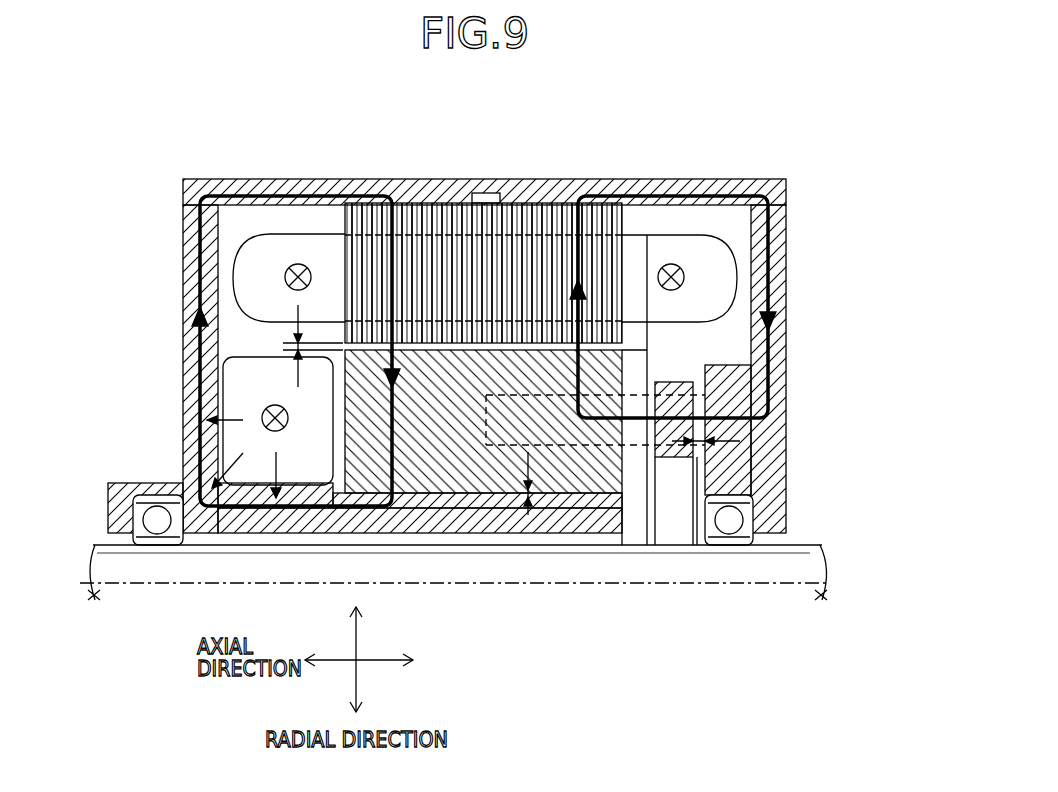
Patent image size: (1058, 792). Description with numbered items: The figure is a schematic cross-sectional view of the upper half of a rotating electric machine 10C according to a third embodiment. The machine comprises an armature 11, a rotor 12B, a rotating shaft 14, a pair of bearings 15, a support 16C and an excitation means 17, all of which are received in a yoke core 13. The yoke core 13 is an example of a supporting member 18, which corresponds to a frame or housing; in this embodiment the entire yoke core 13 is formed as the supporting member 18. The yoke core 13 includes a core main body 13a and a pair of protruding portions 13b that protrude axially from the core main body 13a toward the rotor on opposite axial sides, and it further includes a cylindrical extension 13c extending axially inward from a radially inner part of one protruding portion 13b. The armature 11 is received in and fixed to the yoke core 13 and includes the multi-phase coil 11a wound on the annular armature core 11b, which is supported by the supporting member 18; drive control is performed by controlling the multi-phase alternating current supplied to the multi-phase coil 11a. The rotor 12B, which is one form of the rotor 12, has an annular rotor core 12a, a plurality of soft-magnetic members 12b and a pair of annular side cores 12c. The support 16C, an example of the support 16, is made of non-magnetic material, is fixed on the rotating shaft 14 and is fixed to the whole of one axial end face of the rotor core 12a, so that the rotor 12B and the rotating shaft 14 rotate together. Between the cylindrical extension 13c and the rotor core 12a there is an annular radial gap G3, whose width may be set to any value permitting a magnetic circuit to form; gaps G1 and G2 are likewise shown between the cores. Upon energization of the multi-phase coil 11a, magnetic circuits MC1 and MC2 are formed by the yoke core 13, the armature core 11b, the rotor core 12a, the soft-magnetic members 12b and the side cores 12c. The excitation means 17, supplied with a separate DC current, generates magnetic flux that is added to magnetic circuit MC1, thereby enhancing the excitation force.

The rotating electric machine 10C is at (500, 369).
The armature 11 is at (485, 213).
The multi-phase coil 11a is at (313, 250).
The armature core 11b is at (457, 280).
The rotor 12B is at (528, 314).
The rotor 12 is at (528, 314).
The rotor core 12a is at (530, 375).
The soft-magnetic members 12b is at (637, 405).
The annular side cores 12c is at (678, 403).
The yoke core 13 is at (506, 331).
The core main body 13a is at (777, 205).
The protruding portions 13b is at (784, 400).
The cylindrical extension 13c is at (473, 512).
The supporting member 18 is at (506, 331).
The rotating shaft 14 is at (205, 565).
The bearings 15 is at (157, 522).
The support 16C is at (455, 571).
The support 16 is at (636, 505).
The excitation means 17 is at (237, 410).
The magnetic circuit MC1 is at (197, 253).
The magnetic circuit MC2 is at (770, 277).
The gap 1 G1 is at (295, 346).
The gap 2 G2 is at (685, 440).
The radial gap G3 is at (549, 516).